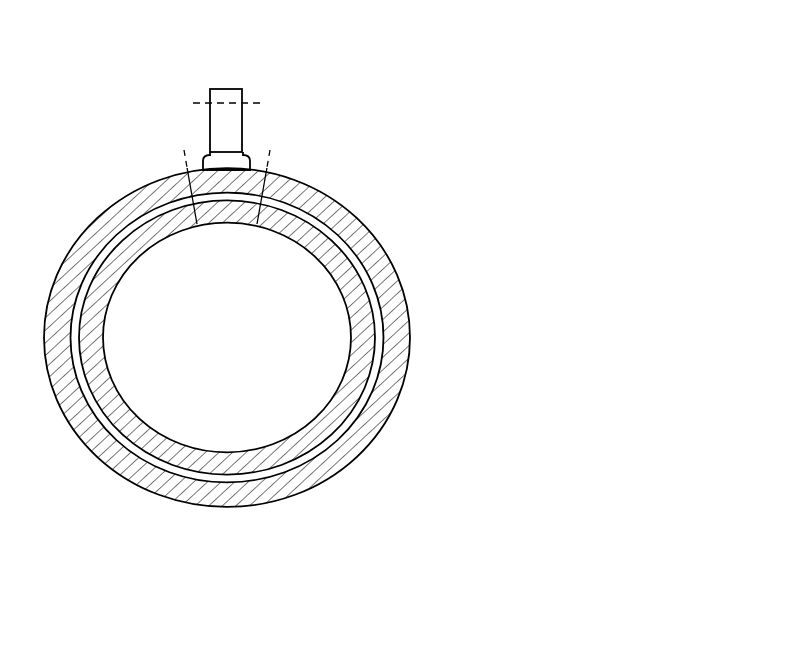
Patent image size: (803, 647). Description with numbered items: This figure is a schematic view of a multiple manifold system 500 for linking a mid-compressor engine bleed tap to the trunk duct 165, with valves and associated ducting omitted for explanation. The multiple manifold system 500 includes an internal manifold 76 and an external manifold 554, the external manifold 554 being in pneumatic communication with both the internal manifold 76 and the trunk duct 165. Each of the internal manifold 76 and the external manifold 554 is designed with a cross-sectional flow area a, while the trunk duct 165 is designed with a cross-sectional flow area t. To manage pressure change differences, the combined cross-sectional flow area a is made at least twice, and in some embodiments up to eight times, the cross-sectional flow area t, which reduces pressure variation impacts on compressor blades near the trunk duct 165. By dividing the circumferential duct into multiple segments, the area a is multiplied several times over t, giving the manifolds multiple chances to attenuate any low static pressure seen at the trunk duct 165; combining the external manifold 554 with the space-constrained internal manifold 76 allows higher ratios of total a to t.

The multiple manifold system 500 is at (362, 38).
The external manifold 554 is at (126, 198).
The internal manifold 76 is at (310, 450).
The trunk duct 165 is at (213, 134).
The cross-sectional flow area of the trunk duct t is at (235, 104).
The cross-sectional flow area of the manifolds a is at (197, 225).